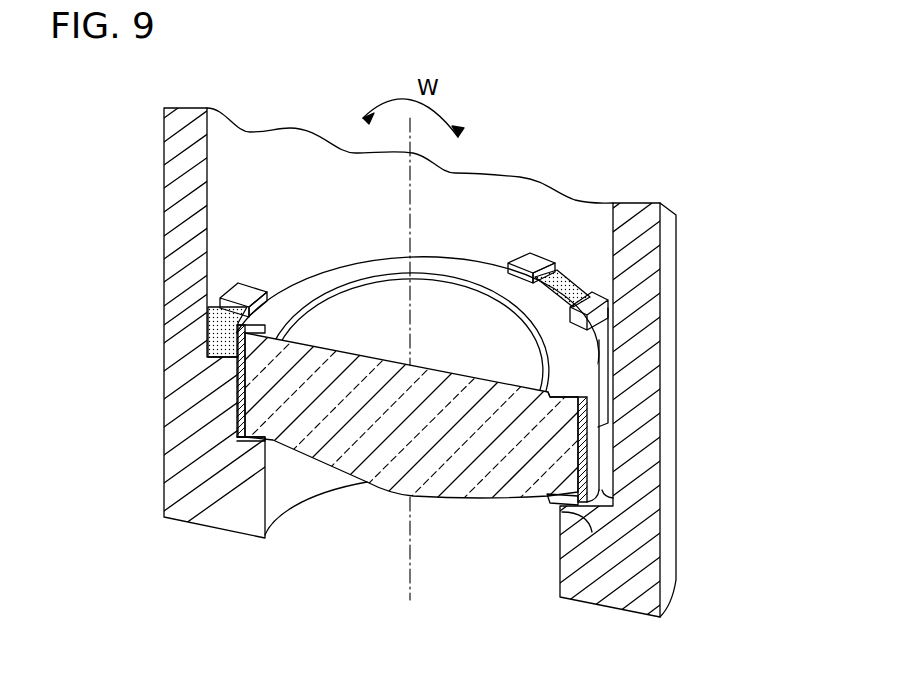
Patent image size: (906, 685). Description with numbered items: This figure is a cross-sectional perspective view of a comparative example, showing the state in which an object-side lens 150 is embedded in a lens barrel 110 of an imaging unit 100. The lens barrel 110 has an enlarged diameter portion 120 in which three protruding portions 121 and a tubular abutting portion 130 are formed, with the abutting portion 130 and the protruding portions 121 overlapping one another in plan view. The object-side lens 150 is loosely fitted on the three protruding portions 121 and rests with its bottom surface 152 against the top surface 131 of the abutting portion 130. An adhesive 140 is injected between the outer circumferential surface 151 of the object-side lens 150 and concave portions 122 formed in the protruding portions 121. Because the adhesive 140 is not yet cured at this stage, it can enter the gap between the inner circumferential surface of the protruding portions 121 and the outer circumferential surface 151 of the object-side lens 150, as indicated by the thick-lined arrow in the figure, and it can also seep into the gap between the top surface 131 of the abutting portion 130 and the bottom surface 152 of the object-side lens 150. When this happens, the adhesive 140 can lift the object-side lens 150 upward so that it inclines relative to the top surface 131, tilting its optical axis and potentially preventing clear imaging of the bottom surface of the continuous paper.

The imaging unit 100 is at (246, 92).
The lens barrel 110 is at (688, 243).
The enlarged diameter portion 120 is at (668, 302).
The protruding portions 121 is at (250, 288).
The concave portions 122 is at (228, 295).
The abutting portion 130 is at (562, 530).
The top surface 131 is at (603, 497).
The adhesive 140 is at (208, 332).
The object-side lens 150 is at (356, 259).
The outer circumferential surface 151 is at (593, 442).
The bottom surface 152 is at (563, 504).